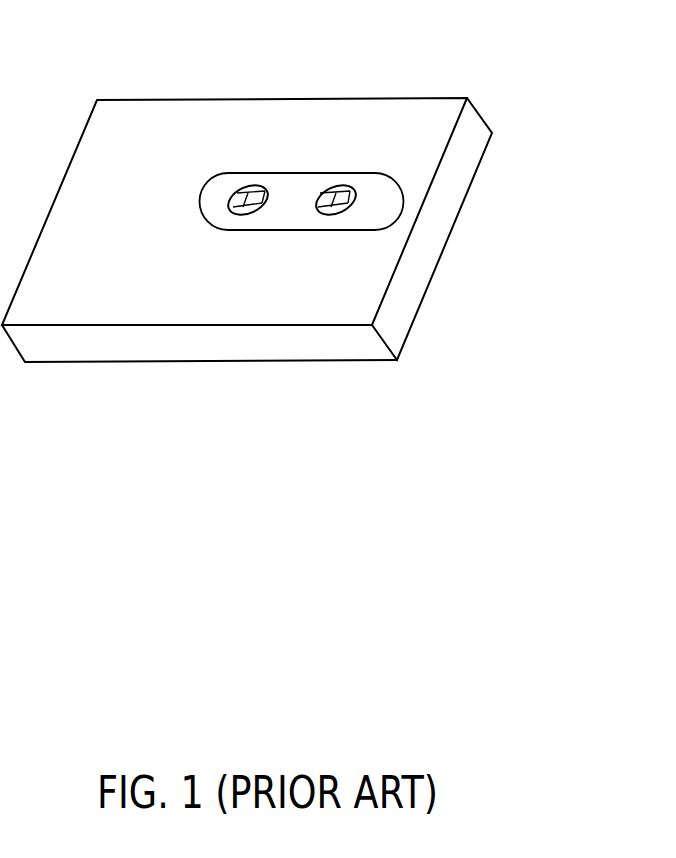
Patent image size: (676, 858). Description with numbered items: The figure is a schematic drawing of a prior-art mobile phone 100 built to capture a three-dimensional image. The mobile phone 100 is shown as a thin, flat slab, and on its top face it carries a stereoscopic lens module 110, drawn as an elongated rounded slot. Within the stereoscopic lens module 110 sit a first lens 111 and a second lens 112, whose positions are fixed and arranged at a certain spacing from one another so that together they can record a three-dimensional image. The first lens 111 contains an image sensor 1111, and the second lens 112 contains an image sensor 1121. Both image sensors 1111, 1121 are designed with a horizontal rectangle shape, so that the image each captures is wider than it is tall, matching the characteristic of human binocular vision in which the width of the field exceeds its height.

The mobile phone 100 is at (433, 273).
The stereoscopic lens module 110 is at (283, 173).
The first lens 111 is at (230, 210).
The image sensor 1111 is at (232, 200).
The second lens 112 is at (325, 213).
The image sensor 1121 is at (337, 195).